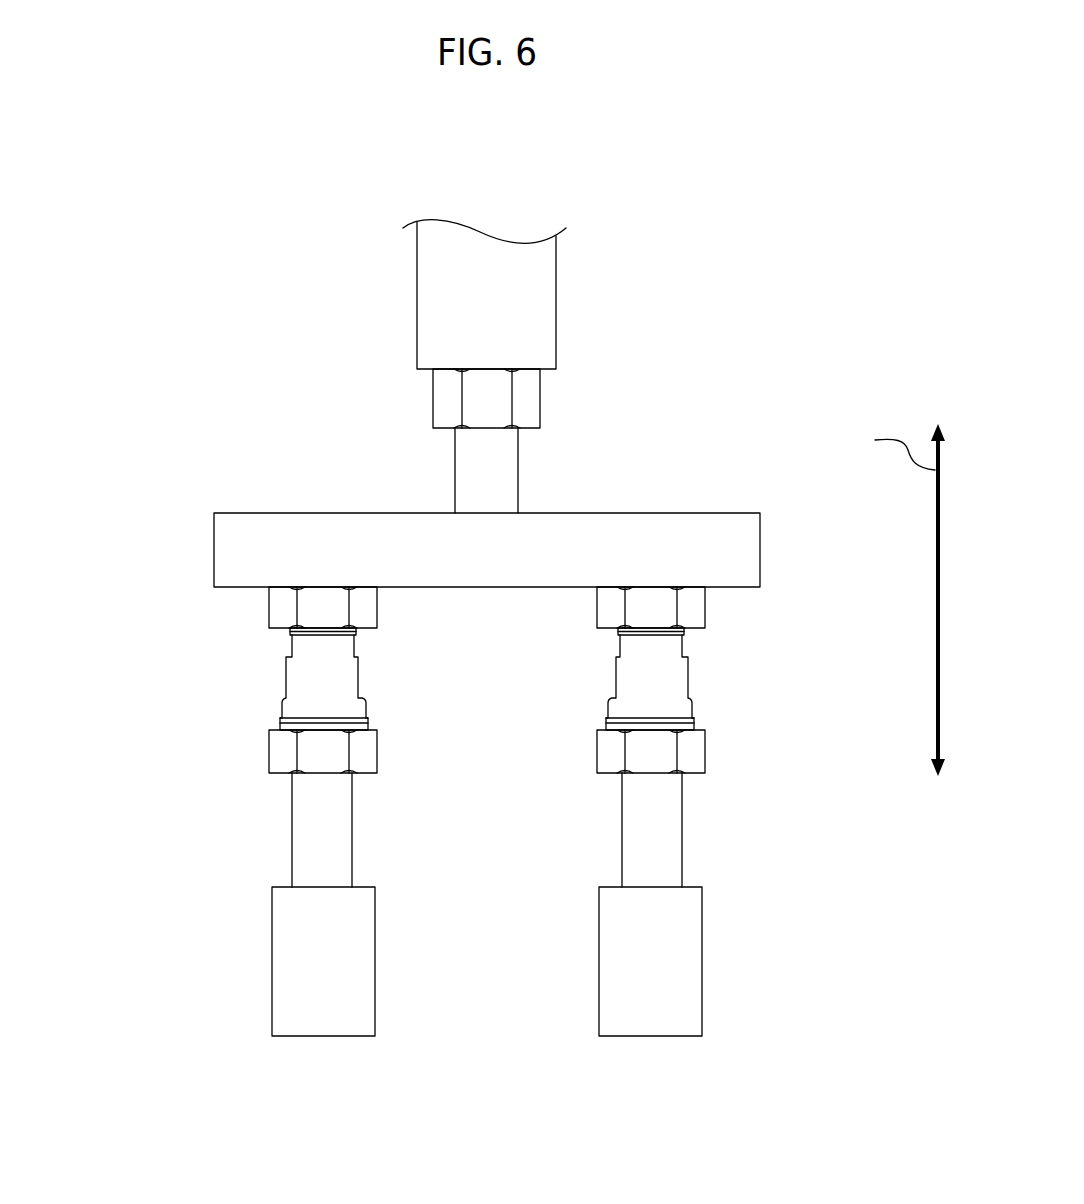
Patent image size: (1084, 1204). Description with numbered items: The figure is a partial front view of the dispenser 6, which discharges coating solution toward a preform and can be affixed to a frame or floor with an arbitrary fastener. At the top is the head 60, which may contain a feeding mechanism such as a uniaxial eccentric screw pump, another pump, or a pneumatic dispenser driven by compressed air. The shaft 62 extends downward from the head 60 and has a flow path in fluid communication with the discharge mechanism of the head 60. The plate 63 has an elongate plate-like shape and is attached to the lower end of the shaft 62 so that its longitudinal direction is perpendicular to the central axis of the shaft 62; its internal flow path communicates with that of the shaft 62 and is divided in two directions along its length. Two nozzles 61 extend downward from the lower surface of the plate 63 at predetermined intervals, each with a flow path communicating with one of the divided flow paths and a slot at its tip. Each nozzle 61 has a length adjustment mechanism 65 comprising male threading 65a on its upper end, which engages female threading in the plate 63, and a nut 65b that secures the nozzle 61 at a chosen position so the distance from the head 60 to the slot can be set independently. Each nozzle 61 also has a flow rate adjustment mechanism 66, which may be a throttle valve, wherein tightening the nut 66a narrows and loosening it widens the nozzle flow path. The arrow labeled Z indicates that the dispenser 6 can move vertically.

The dispenser 6 is at (660, 323).
The head 60 is at (445, 293).
The nozzle 61 is at (312, 967).
The shaft 62 is at (488, 450).
The plate 63 is at (710, 546).
The length adjustment mechanism 65 is at (150, 664).
The male threading 65a is at (285, 632).
The nut 65b is at (280, 603).
The flow rate adjustment mechanism 66 is at (148, 762).
The nut 66a is at (287, 752).